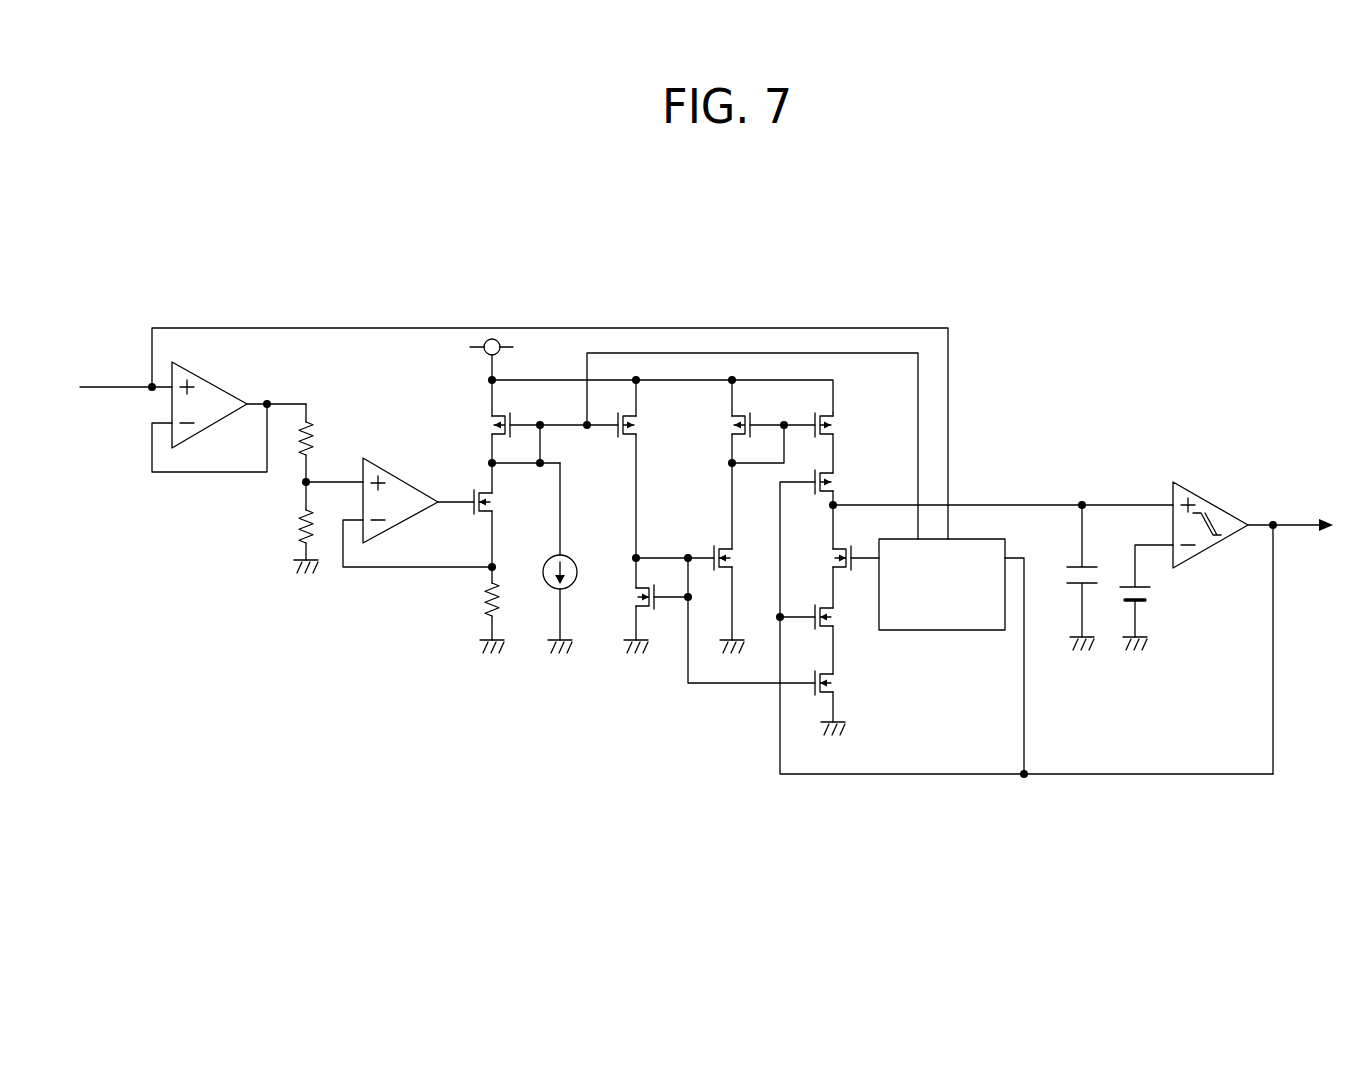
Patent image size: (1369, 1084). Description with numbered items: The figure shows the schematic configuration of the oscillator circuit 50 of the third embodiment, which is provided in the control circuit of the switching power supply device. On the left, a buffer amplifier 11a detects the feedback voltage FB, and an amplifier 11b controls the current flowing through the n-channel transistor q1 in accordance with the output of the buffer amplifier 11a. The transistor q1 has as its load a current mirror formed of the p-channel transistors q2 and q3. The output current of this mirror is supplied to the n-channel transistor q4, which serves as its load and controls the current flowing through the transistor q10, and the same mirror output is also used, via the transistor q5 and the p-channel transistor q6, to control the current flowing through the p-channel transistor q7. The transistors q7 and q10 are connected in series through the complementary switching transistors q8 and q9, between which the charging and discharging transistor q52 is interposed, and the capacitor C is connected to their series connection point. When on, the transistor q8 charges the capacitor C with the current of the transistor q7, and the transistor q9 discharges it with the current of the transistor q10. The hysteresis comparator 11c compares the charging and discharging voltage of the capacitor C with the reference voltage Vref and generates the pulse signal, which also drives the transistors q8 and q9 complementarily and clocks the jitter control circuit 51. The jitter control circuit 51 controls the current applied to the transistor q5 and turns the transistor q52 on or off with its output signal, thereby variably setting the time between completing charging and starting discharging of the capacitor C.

The oscillator circuit 50 is at (1013, 322).
The jitter control circuit 51 is at (970, 612).
The buffer amplifier 11a is at (210, 408).
The amplifier 11b is at (395, 507).
The hysteresis comparator 11c is at (1220, 533).
The transistor q1 is at (502, 515).
The transistor q2 is at (522, 423).
The transistor q3 is at (632, 469).
The transistor q4 is at (644, 599).
The transistor q5 is at (743, 592).
The transistor q6 is at (754, 464).
The transistor q7 is at (843, 442).
The transistor q8 is at (1026, 621).
The transistor q9 is at (824, 639).
The transistor q10 is at (849, 695).
The charging and discharging transistor q52 is at (833, 576).
The capacitor C is at (1088, 571).
The reference voltage Vref is at (1164, 591).